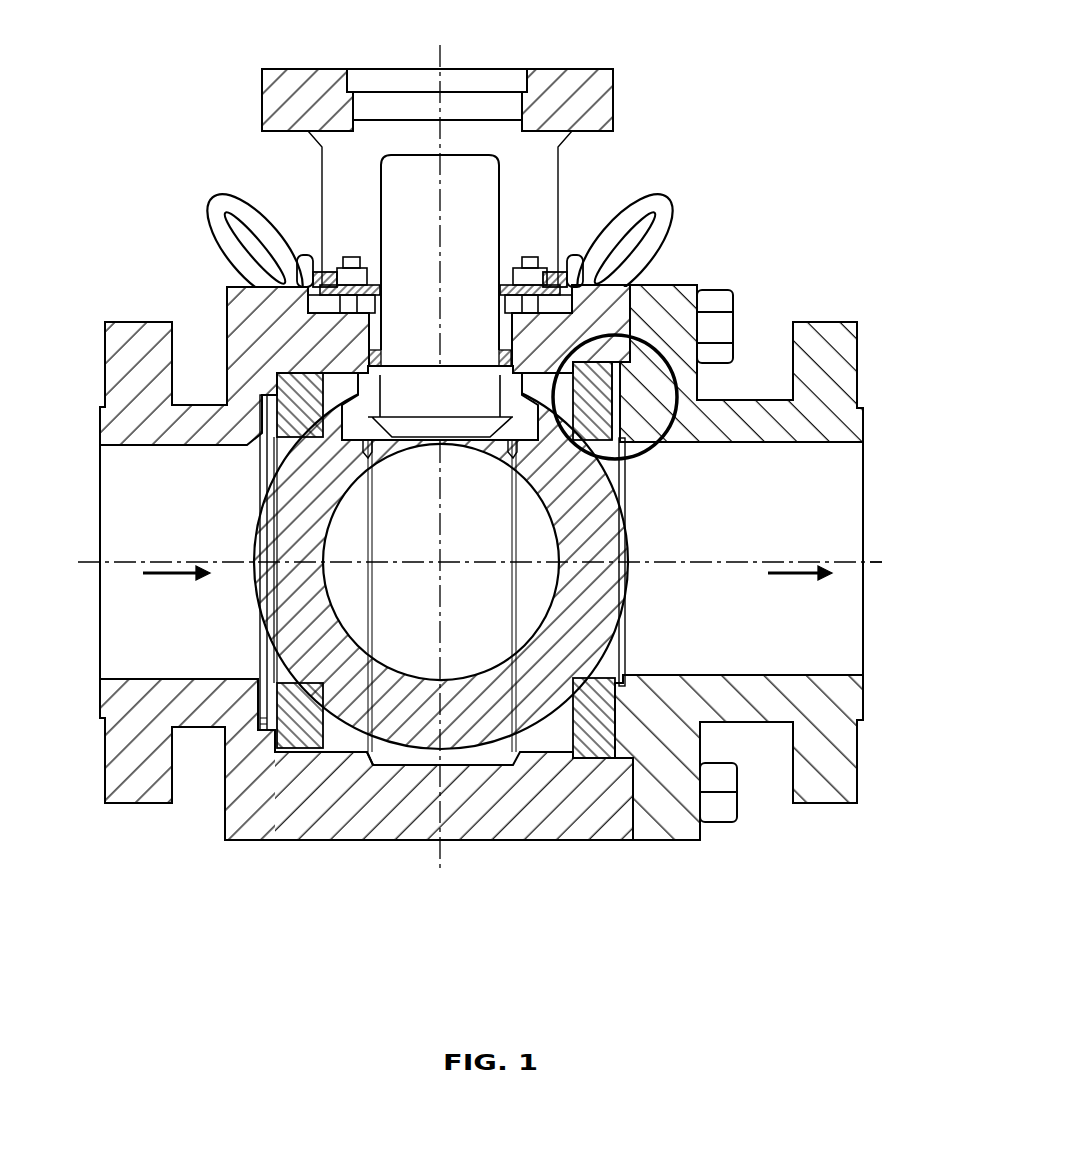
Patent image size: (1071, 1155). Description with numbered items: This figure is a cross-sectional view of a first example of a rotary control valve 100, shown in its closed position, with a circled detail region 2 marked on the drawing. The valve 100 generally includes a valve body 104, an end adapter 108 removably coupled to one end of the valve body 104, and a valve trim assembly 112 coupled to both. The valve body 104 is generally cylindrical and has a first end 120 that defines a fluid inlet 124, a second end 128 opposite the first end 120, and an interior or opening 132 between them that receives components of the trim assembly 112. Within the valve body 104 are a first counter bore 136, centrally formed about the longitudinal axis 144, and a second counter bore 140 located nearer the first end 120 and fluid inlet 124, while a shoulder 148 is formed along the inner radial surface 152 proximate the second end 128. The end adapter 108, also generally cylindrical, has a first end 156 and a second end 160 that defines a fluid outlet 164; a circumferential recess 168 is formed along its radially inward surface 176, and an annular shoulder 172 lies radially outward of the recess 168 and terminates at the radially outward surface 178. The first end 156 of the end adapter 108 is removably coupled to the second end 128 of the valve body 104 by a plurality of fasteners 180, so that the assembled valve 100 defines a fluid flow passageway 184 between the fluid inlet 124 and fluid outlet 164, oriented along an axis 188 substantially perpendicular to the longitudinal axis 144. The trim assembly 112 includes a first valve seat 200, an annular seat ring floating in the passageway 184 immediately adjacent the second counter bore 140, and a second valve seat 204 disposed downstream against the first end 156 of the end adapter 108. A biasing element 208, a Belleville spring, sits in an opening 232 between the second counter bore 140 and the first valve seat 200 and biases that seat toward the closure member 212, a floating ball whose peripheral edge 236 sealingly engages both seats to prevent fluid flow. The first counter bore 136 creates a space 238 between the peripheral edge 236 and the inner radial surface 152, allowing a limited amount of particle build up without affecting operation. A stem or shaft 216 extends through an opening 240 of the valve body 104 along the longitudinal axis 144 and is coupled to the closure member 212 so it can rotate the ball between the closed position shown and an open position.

The rotary control valve 100 is at (688, 38).
The valve body 104 is at (210, 800).
The end adapter 108 is at (772, 736).
The valve trim assembly 112 is at (640, 490).
The first end 120 is at (98, 423).
The fluid inlet 124 is at (122, 616).
The second end 128 is at (628, 815).
The interior or opening 132 is at (332, 757).
The first counter bore 136 is at (473, 766).
The second counter bore 140 is at (262, 730).
The longitudinal axis 144 is at (440, 845).
The shoulder 148 is at (592, 372).
The inner radial surface 152 is at (527, 355).
The first end 156 is at (637, 826).
The second end 160 is at (861, 775).
The fluid outlet 164 is at (833, 637).
The circumferential recess 168 is at (623, 428).
The annular shoulder 172 is at (632, 322).
The radially inward surface 176 is at (866, 446).
The radially outward surface 178 is at (688, 288).
The fasteners 180 is at (735, 326).
The fluid flow passageway 184 is at (487, 585).
The axis 188 is at (873, 561).
The first valve seat 200 is at (266, 460).
The second valve seat 204 is at (590, 735).
The biasing element 208 is at (258, 696).
The closure member 212 is at (642, 546).
The stem or shaft 216 is at (520, 167).
The opening 232 is at (278, 733).
The peripheral edge 236 is at (629, 613).
The space 238 is at (390, 757).
The opening 240 is at (383, 347).
The detail view circle 2 is at (677, 384).